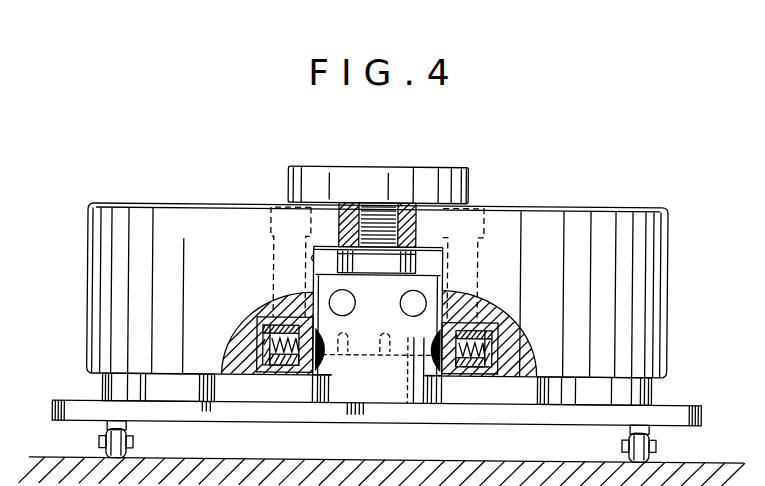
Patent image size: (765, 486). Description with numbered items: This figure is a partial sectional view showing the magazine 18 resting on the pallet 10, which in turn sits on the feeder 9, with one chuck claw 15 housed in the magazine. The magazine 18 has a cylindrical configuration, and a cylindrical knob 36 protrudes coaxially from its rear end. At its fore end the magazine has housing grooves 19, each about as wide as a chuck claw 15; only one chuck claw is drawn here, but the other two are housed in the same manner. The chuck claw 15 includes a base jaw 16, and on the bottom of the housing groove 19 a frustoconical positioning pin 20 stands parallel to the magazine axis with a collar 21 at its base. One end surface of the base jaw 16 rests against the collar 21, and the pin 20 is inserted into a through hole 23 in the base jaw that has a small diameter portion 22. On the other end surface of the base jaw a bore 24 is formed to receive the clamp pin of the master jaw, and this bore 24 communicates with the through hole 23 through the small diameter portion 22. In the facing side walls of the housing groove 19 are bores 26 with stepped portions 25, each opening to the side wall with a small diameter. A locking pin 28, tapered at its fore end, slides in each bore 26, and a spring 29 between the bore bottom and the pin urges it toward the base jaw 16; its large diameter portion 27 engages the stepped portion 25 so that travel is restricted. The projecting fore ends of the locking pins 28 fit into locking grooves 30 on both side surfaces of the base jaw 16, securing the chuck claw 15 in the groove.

The feeder 9 is at (62, 458).
The pallet 10 is at (82, 406).
The chuck claw 15 is at (310, 394).
The base jaw 16 is at (330, 278).
The magazine 18 is at (140, 218).
The housing groove 19 is at (313, 247).
The positioning pin 20 is at (400, 282).
The collar 21 is at (413, 256).
The small diameter portion 22 is at (404, 356).
The through hole 23 is at (395, 285).
The bore 24 is at (331, 395).
The stepped portion 25 is at (262, 325).
The bore 26 is at (282, 318).
The large diameter portion 27 is at (262, 355).
The locking pin 28 is at (292, 375).
The spring 29 is at (262, 333).
The locking groove 30 is at (331, 360).
The knob 36 is at (287, 184).